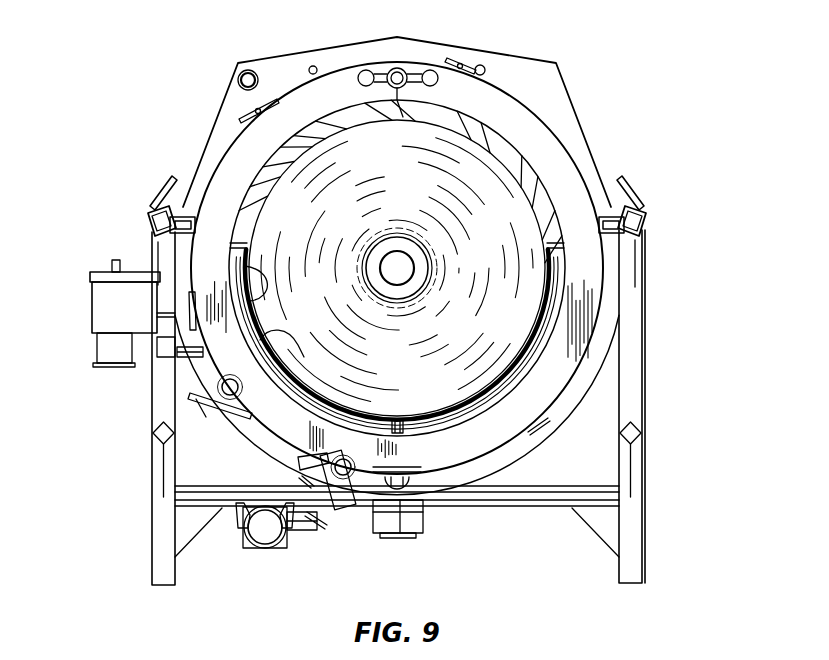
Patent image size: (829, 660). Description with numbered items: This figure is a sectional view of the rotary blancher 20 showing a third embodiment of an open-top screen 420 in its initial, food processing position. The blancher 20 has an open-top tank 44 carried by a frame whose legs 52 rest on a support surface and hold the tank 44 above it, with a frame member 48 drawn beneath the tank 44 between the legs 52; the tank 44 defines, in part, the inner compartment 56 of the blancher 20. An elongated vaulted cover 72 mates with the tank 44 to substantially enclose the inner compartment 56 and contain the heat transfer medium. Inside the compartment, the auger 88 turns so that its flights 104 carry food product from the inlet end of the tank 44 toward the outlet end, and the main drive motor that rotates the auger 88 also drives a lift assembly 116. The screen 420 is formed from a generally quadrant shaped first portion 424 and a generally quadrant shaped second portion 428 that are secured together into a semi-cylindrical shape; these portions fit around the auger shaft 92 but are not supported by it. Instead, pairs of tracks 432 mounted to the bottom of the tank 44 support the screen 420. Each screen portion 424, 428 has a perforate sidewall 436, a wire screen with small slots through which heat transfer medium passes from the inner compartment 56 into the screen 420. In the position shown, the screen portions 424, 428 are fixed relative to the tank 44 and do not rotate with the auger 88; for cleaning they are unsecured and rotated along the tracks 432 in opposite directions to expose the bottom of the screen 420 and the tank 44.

The rotary blancher 20 is at (166, 73).
The lift assembly 116 is at (338, 92).
The cover 72 is at (533, 70).
The inner compartment 56 is at (547, 163).
The first portion 424 is at (233, 263).
The auger 88 is at (374, 229).
The auger shaft 92 is at (413, 231).
The perforate sidewall 436 is at (250, 272).
The second portion 428 is at (553, 299).
The open-top screen 420 is at (335, 400).
The tracks 432 is at (540, 363).
The flights 104 is at (367, 295).
The open-top tank 44 is at (563, 407).
The legs 52 is at (157, 551).
The cross member 48 is at (503, 510).